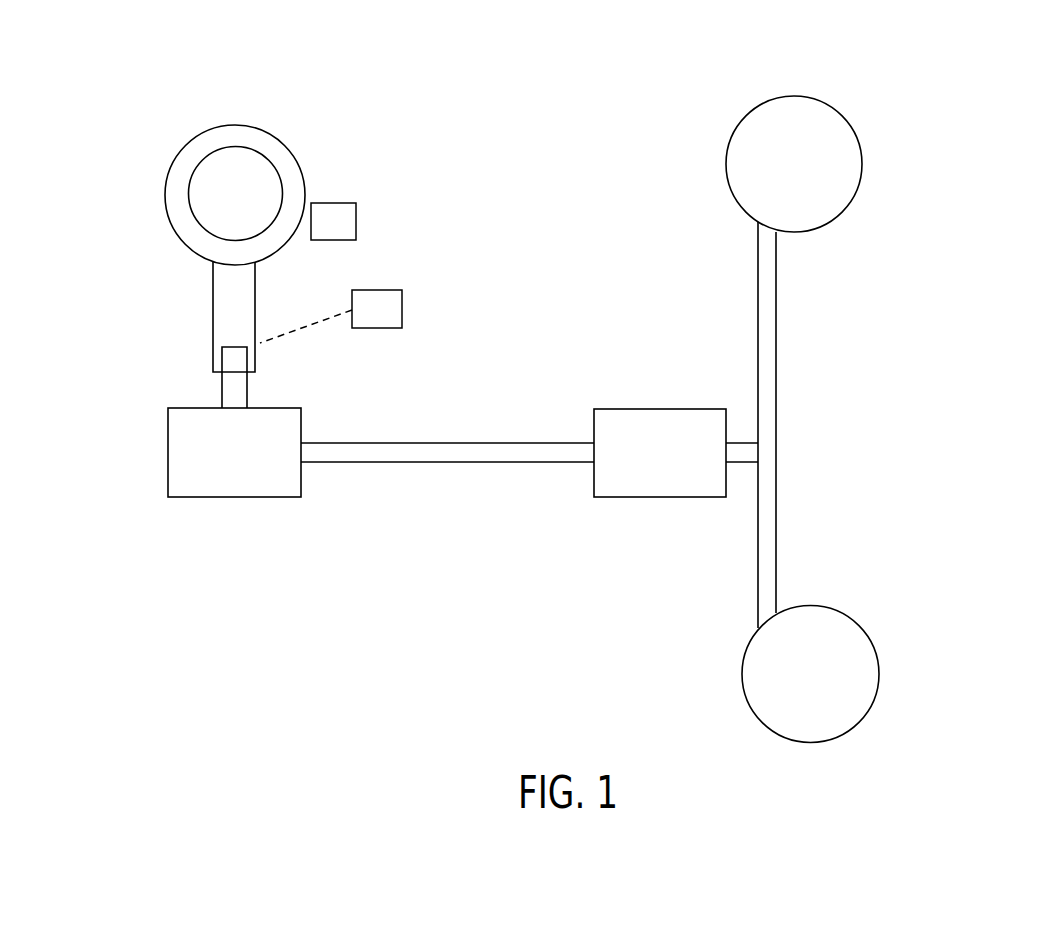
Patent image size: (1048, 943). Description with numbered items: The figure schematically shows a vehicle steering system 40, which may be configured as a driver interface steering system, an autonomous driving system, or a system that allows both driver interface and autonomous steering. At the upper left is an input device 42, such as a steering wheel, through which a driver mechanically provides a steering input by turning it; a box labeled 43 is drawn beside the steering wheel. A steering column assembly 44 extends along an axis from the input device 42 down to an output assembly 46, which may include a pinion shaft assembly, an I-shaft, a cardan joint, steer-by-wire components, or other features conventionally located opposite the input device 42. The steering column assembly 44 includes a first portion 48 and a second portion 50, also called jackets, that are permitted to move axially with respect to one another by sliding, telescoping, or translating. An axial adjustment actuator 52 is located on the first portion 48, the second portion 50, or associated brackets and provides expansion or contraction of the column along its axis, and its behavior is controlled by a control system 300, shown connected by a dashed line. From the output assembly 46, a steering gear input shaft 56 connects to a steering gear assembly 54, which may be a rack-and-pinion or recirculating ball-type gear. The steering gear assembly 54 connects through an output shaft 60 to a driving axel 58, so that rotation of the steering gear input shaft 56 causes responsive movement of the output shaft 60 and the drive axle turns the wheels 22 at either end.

The steering system 40 is at (965, 117).
The input device 42 is at (172, 180).
The steering wheel sensor 43 is at (343, 236).
The steering column assembly 44 is at (178, 330).
The first portion 48 is at (255, 298).
The axial adjustment actuator 52 is at (255, 362).
The second portion 50 is at (248, 395).
The control system 300 is at (364, 323).
The output assembly 46 is at (244, 463).
The steering gear input shaft 56 is at (562, 450).
The steering gear assembly 54 is at (670, 463).
The output shaft 60 is at (748, 448).
The driving axel 58 is at (772, 470).
The wheels 22 is at (852, 195).